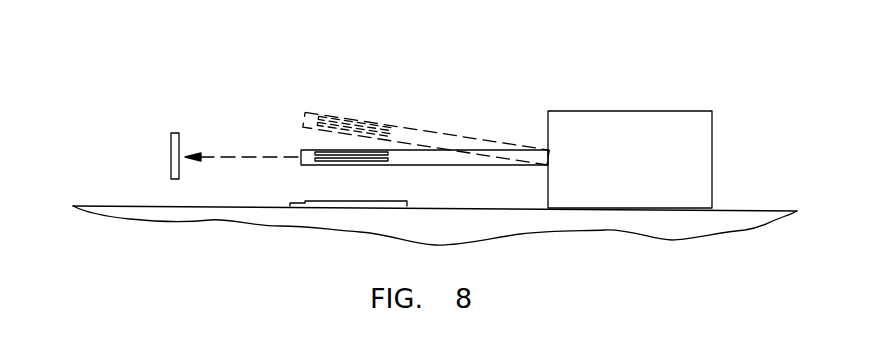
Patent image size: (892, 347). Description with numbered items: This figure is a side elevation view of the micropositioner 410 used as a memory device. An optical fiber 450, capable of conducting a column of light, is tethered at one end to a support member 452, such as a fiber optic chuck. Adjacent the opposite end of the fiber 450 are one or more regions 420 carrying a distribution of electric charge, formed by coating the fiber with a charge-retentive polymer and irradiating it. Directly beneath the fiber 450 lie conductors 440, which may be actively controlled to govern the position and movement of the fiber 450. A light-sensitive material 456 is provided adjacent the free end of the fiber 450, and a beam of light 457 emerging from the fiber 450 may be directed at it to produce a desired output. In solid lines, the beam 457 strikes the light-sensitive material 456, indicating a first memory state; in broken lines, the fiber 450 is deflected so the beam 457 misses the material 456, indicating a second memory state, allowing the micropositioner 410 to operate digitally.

The micropositioner 410 is at (452, 70).
The regions 420 is at (342, 158).
The conductors 440 is at (400, 201).
The optical fiber 450 is at (458, 157).
The support member 452 is at (638, 137).
The light-sensitive material 456 is at (170, 152).
The beam of light 457 is at (222, 158).